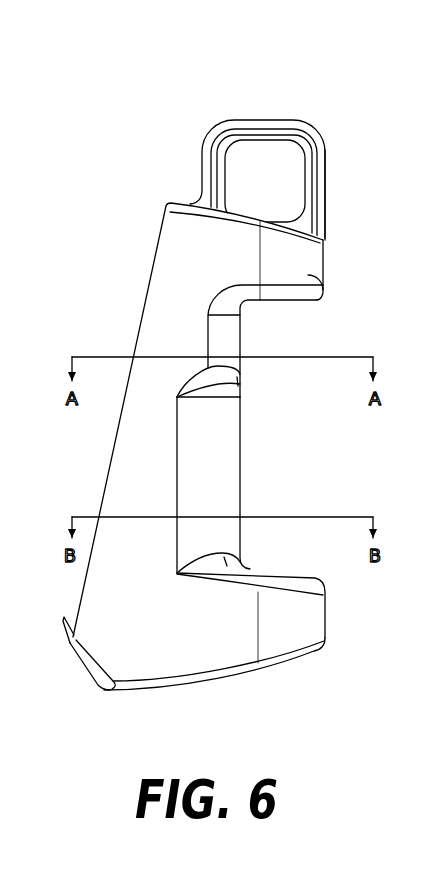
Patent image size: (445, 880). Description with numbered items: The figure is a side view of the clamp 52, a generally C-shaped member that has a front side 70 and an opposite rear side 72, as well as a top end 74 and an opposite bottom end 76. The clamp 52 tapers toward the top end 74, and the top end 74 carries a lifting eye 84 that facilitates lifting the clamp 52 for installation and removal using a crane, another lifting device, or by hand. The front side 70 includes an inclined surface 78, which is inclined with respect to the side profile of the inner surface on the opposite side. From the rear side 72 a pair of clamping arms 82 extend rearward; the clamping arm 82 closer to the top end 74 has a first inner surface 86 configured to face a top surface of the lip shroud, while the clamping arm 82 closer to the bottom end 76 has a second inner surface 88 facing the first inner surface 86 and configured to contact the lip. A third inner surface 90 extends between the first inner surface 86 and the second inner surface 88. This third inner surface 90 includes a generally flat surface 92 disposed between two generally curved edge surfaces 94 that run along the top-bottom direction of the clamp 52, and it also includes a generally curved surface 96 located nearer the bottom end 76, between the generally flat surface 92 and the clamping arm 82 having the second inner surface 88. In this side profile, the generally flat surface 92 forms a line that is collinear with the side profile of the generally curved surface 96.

The clamp 52 is at (336, 123).
The top end 74 is at (264, 109).
The lifting eye 84 is at (326, 172).
The inclined surface 78 is at (155, 256).
The rear side 72 is at (326, 264).
The front side 70 is at (119, 407).
The generally curved edge surfaces 94 is at (212, 337).
The first inner surface 86 is at (267, 303).
The clamping arms 82 is at (323, 292).
The generally flat surface 92 is at (242, 347).
The third inner surface 90 is at (219, 432).
The generally curved surface 96 is at (232, 468).
The second inner surface 88 is at (280, 573).
The bottom end 76 is at (203, 691).